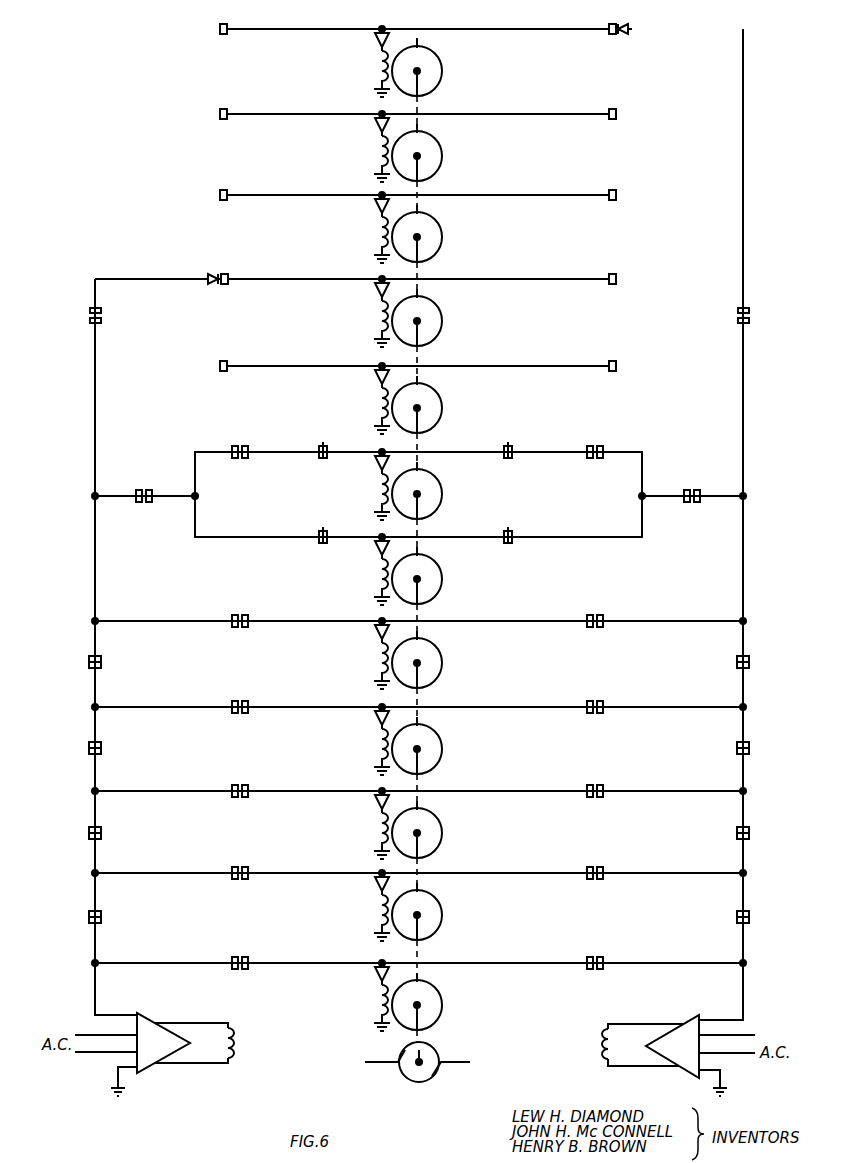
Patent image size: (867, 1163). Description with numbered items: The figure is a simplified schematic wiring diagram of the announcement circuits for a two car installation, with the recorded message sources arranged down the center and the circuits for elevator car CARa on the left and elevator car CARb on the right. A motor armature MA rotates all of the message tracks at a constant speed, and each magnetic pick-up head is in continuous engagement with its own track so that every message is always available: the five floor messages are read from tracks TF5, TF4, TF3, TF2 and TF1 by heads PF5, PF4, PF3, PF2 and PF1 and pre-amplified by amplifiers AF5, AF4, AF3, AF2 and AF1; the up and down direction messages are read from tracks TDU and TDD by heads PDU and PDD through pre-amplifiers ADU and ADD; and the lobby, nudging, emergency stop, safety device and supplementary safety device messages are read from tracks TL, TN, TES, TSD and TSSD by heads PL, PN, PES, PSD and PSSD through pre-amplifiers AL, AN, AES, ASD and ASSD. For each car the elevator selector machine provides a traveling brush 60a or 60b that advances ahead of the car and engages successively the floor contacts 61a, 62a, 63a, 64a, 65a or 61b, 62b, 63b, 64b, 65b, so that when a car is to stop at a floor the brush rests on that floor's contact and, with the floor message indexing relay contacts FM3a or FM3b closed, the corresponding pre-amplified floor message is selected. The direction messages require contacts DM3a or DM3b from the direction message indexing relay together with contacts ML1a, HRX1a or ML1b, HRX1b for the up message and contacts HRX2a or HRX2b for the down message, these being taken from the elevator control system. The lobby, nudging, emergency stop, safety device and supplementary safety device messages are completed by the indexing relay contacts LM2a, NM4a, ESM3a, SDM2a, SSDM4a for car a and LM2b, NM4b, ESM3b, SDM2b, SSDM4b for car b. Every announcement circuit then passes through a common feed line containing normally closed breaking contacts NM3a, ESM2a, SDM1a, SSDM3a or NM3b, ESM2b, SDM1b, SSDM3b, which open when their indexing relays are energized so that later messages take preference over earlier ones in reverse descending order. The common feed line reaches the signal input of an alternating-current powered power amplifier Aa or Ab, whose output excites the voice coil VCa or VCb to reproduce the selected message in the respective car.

The floor contact 65a is at (228, 19).
The floor contact 64a is at (228, 104).
The floor contact 63a is at (228, 185).
The floor contact 62a is at (238, 269).
The floor contact 61a is at (228, 356).
The traveling brush 60a is at (203, 269).
The floor contact 65b is at (604, 18).
The floor contact 64b is at (612, 104).
The floor contact 63b is at (612, 185).
The floor contact 62b is at (612, 269).
The floor contact 61b is at (612, 356).
The traveling brush 60b is at (629, 27).
The floor message indexing relay contacts FM3a is at (103, 322).
The floor message indexing relay contacts FM3b is at (750, 322).
The pre-amplifier AF5 is at (374, 40).
The magnetic pick-up head PF5 is at (376, 67).
The floor message track TF5 is at (436, 54).
The pre-amplifier AF4 is at (374, 125).
The magnetic pick-up head PF4 is at (376, 152).
The floor message track TF4 is at (436, 139).
The pre-amplifier AF3 is at (374, 206).
The magnetic pick-up head PF3 is at (376, 233).
The floor message track TF3 is at (436, 220).
The pre-amplifier AF2 is at (374, 290).
The magnetic pick-up head PF2 is at (376, 317).
The floor message track TF2 is at (436, 304).
The pre-amplifier AF1 is at (374, 377).
The magnetic pick-up head PF1 is at (376, 404).
The floor message track TF1 is at (436, 391).
The pre-amplifier ADU is at (374, 463).
The magnetic pick-up head PDU is at (376, 490).
The up direction message track TDU is at (436, 477).
The pre-amplifier ADD is at (374, 548).
The magnetic pick-up head PDD is at (376, 575).
The down direction message track TDD is at (436, 562).
The pre-amplifier AL is at (374, 632).
The magnetic pick-up head PL is at (376, 659).
The lobby message track TL is at (436, 646).
The pre-amplifier AN is at (374, 718).
The magnetic pick-up head PN is at (376, 745).
The nudging message track TN is at (436, 732).
The pre-amplifier AES is at (374, 802).
The magnetic pick-up head PES is at (376, 829).
The emergency stop message track TES is at (436, 816).
The pre-amplifier ASD is at (374, 884).
The magnetic pick-up head PSD is at (376, 911).
The safety device message track TSD is at (436, 898).
The pre-amplifier ASSD is at (374, 974).
The magnetic pick-up head PSSD is at (376, 1001).
The supplementary safety device message track TSSD is at (436, 988).
The auxiliary highest call reversal switch contacts HRX1a is at (240, 444).
The auxiliary highest call reversal switch contacts HRX1b is at (595, 444).
The auxiliary highest call reversal switch contacts HRX2a is at (323, 525).
The auxiliary highest call reversal switch contacts HRX2b is at (507, 525).
The main landing switch contacts ML1a is at (323, 440).
The main landing switch contacts ML1b is at (508, 440).
The direction message indexing relay contacts DM3a is at (144, 488).
The direction message indexing relay contacts DM3b is at (692, 488).
The lobby message indexing relay contacts LM2a is at (240, 613).
The lobby message indexing relay contacts LM2b is at (595, 613).
The nudging message indexing relay breaking contacts NM3a is at (88, 662).
The nudging message indexing relay breaking contacts NM3b is at (750, 662).
The nudging message indexing relay contacts NM4a is at (240, 699).
The nudging message indexing relay contacts NM4b is at (595, 699).
The emergency stop message indexing relay breaking contacts ESM2a is at (88, 748).
The emergency stop message indexing relay breaking contacts ESM2b is at (750, 748).
The emergency stop message indexing relay contacts ESM3a is at (240, 783).
The emergency stop message indexing relay contacts ESM3b is at (595, 783).
The safety device message indexing relay breaking contacts SDM1a is at (88, 833).
The safety device message indexing relay breaking contacts SDM1b is at (750, 833).
The safety device message indexing relay contacts SDM2a is at (240, 865).
The safety device message indexing relay contacts SDM2b is at (595, 865).
The supplementary safety device message indexing relay breaking contacts SSDM3a is at (88, 917).
The supplementary safety device message indexing relay breaking contacts SSDM3b is at (750, 917).
The supplementary safety device message indexing relay contacts SSDM4a is at (240, 955).
The supplementary safety device message indexing relay contacts SSDM4b is at (595, 955).
The motor armature MA is at (402, 1080).
The power amplifier Aa is at (132, 1054).
The power amplifier Ab is at (700, 1055).
The voice coil VCa is at (231, 1043).
The voice coil VCb is at (606, 1043).
The elevator car a CARa is at (191, 1062).
The elevator car b CARb is at (646, 1063).